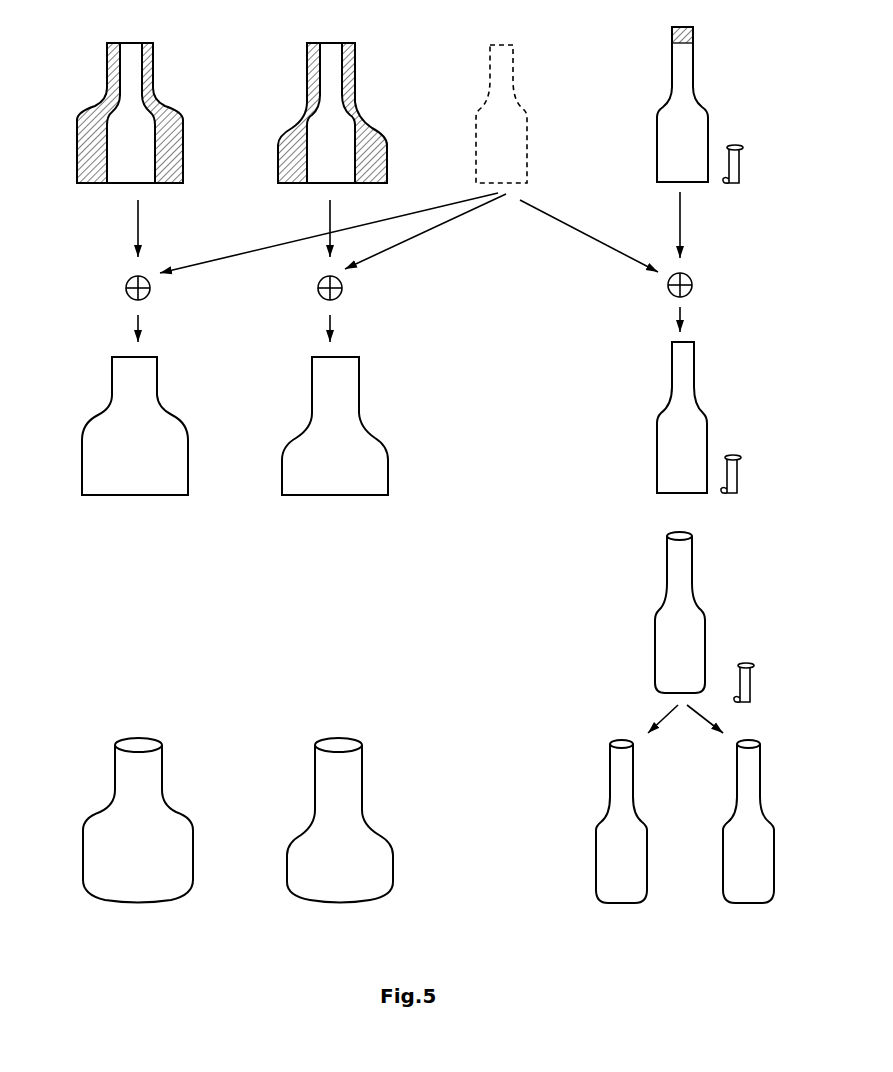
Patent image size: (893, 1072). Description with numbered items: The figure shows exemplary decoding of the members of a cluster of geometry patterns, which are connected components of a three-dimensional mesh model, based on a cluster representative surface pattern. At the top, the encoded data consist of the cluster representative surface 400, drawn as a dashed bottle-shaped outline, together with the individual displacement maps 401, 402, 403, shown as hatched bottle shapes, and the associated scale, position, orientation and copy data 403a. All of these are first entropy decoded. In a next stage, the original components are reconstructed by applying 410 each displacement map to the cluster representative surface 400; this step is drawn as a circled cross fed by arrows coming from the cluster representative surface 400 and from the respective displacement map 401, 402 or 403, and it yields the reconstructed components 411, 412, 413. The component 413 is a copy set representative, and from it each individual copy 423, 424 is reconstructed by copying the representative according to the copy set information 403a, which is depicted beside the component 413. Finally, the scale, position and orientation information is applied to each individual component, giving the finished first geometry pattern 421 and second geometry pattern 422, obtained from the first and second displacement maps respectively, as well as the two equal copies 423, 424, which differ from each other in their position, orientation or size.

The cluster representative surface 400 is at (521, 114).
The displacement map 401 is at (92, 103).
The displacement map 402 is at (305, 85).
The displacement map 403 is at (697, 28).
The copy set information 403a is at (760, 423).
The applying the displacement maps 410 is at (414, 286).
The reconstructed component 411 is at (120, 425).
The reconstructed component 412 is at (326, 426).
The copy set representative component 413 is at (659, 517).
The first geometry pattern 421 is at (125, 820).
The second geometry pattern 422 is at (332, 820).
The individual copy 423 is at (601, 821).
The individual copy 424 is at (726, 821).